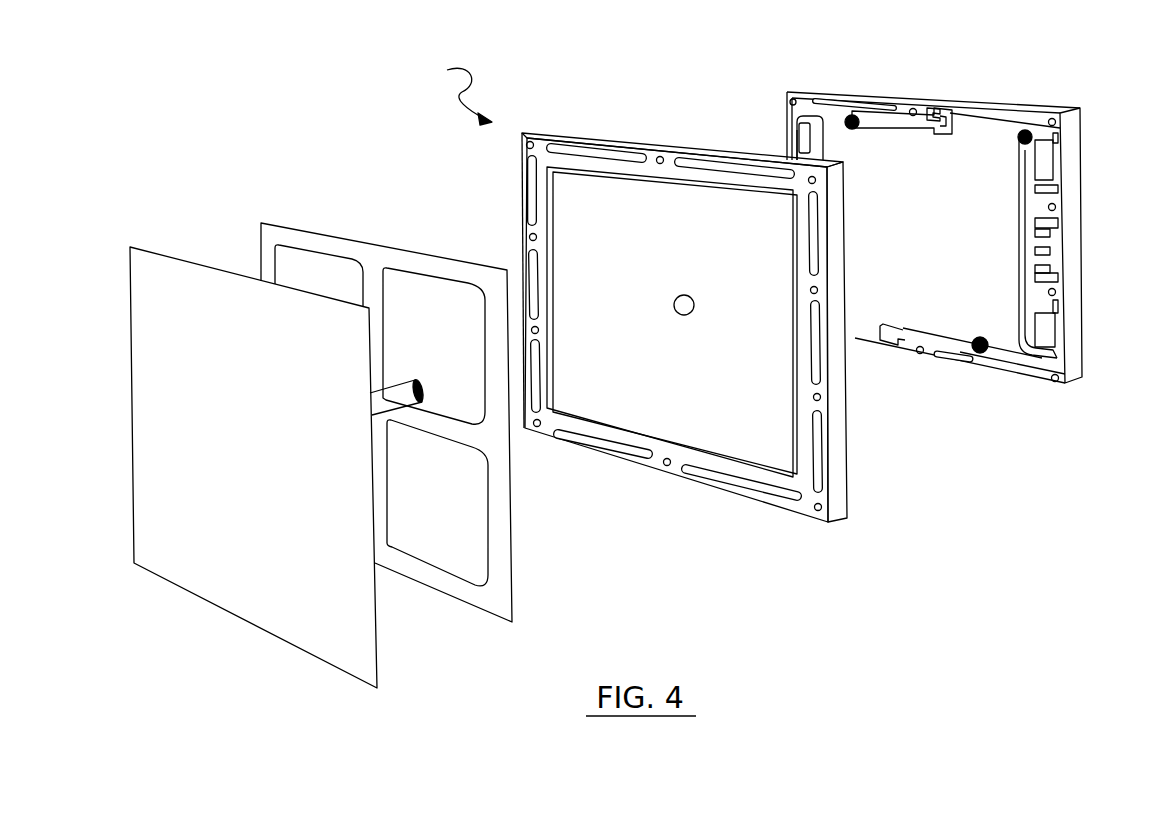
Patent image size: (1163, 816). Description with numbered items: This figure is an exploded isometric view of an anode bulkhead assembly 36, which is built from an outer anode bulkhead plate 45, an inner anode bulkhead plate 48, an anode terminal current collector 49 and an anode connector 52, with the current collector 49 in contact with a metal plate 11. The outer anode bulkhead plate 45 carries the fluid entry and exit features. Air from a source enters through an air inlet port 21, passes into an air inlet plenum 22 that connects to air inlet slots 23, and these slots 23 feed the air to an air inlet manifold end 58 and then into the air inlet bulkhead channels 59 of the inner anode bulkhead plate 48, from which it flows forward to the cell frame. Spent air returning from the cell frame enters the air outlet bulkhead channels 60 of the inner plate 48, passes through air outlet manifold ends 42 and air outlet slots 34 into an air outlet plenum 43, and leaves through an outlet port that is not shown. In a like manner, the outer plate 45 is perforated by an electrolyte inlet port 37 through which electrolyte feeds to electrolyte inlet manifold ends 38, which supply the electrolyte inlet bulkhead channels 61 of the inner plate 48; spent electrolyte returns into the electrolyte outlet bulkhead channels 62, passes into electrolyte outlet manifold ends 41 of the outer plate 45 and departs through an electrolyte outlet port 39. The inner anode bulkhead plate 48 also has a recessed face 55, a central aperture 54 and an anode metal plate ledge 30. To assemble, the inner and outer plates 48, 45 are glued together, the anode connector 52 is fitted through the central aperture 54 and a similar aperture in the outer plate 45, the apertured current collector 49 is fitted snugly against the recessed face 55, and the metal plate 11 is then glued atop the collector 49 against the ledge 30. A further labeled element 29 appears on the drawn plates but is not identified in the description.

The metal plate 11 is at (133, 252).
The anode terminal current collector 49 is at (265, 231).
The anode connector 52 is at (388, 400).
The anode bulkhead assembly 36 is at (450, 80).
The inner anode bulkhead plate 48 is at (646, 302).
The anode metal plate ledge 30 is at (800, 458).
The recessed face 55 is at (584, 276).
The central aperture 54 is at (688, 314).
The air outlet bulkhead channels 60 is at (535, 380).
The electrolyte outlet bulkhead channels 62 is at (722, 168).
The electrolyte inlet bulkhead channels 61 is at (710, 475).
The air inlet bulkhead channels 59 is at (815, 243).
The frame member 29 is at (1068, 384).
The outer anode bulkhead plate 45 is at (883, 99).
The electrolyte outlet manifold ends 41 is at (921, 103).
The electrolyte outlet port 39 is at (850, 116).
The air outlet slots 34 is at (749, 103).
The air outlet plenum 43 is at (796, 121).
The air outlet manifold ends 42 is at (812, 142).
The air inlet port 21 is at (1028, 132).
The air inlet plenum 22 is at (1036, 340).
The air inlet manifold end 58 is at (1055, 185).
The air inlet slots 23 is at (1038, 250).
The electrolyte inlet manifold ends 38 is at (1014, 368).
The electrolyte inlet port 37 is at (978, 353).